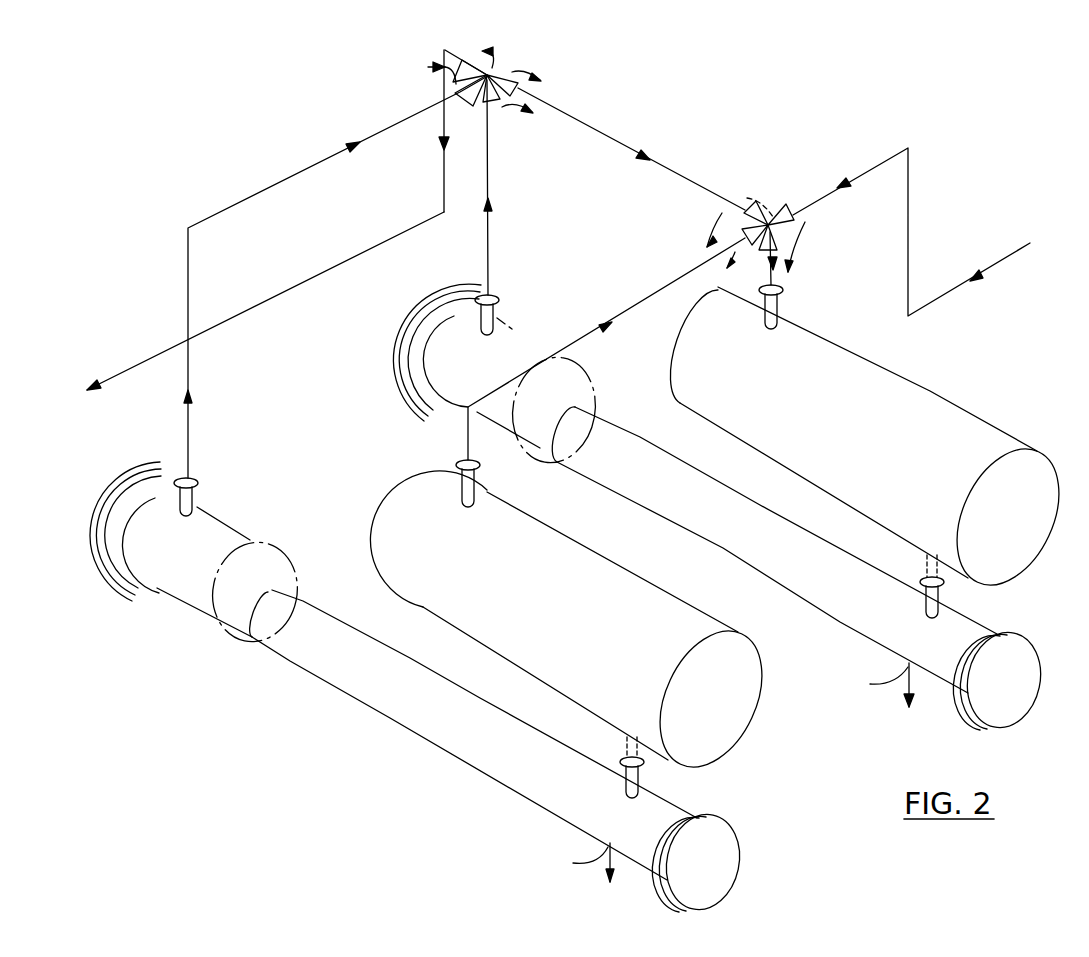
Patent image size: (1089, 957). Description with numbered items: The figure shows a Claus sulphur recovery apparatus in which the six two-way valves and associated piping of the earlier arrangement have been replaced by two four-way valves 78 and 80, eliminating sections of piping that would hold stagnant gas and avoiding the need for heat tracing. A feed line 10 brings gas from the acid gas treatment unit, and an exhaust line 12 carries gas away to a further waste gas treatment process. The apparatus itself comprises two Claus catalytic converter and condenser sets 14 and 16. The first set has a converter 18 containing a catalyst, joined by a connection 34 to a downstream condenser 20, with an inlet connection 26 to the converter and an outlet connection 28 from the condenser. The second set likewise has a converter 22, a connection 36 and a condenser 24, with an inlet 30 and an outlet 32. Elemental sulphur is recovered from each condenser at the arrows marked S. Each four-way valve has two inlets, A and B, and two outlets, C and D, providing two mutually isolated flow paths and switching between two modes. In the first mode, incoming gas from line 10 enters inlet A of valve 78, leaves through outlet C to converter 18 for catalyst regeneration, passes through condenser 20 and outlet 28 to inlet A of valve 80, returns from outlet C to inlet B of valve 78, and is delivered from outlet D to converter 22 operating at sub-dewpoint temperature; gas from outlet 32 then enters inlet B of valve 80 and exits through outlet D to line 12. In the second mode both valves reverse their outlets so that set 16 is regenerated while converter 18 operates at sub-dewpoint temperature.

The feed line 10 is at (962, 272).
The exhaust line 12 is at (152, 355).
The first Claus catalytic converter and condenser set 14 is at (985, 608).
The second Claus catalytic converter and condenser set 16 is at (722, 798).
The converter 18 is at (873, 448).
The condenser 20 is at (725, 525).
The converter 22 is at (545, 600).
The condenser 24 is at (375, 678).
The inlet connection 26 is at (790, 310).
The outlet connection 28 is at (498, 315).
The inlet connection 30 is at (480, 472).
The outlet connection 32 is at (194, 503).
The connection 34 is at (921, 578).
The connection 36 is at (642, 779).
The four-way valve 78 is at (766, 193).
The four-way valve 80 is at (531, 61).